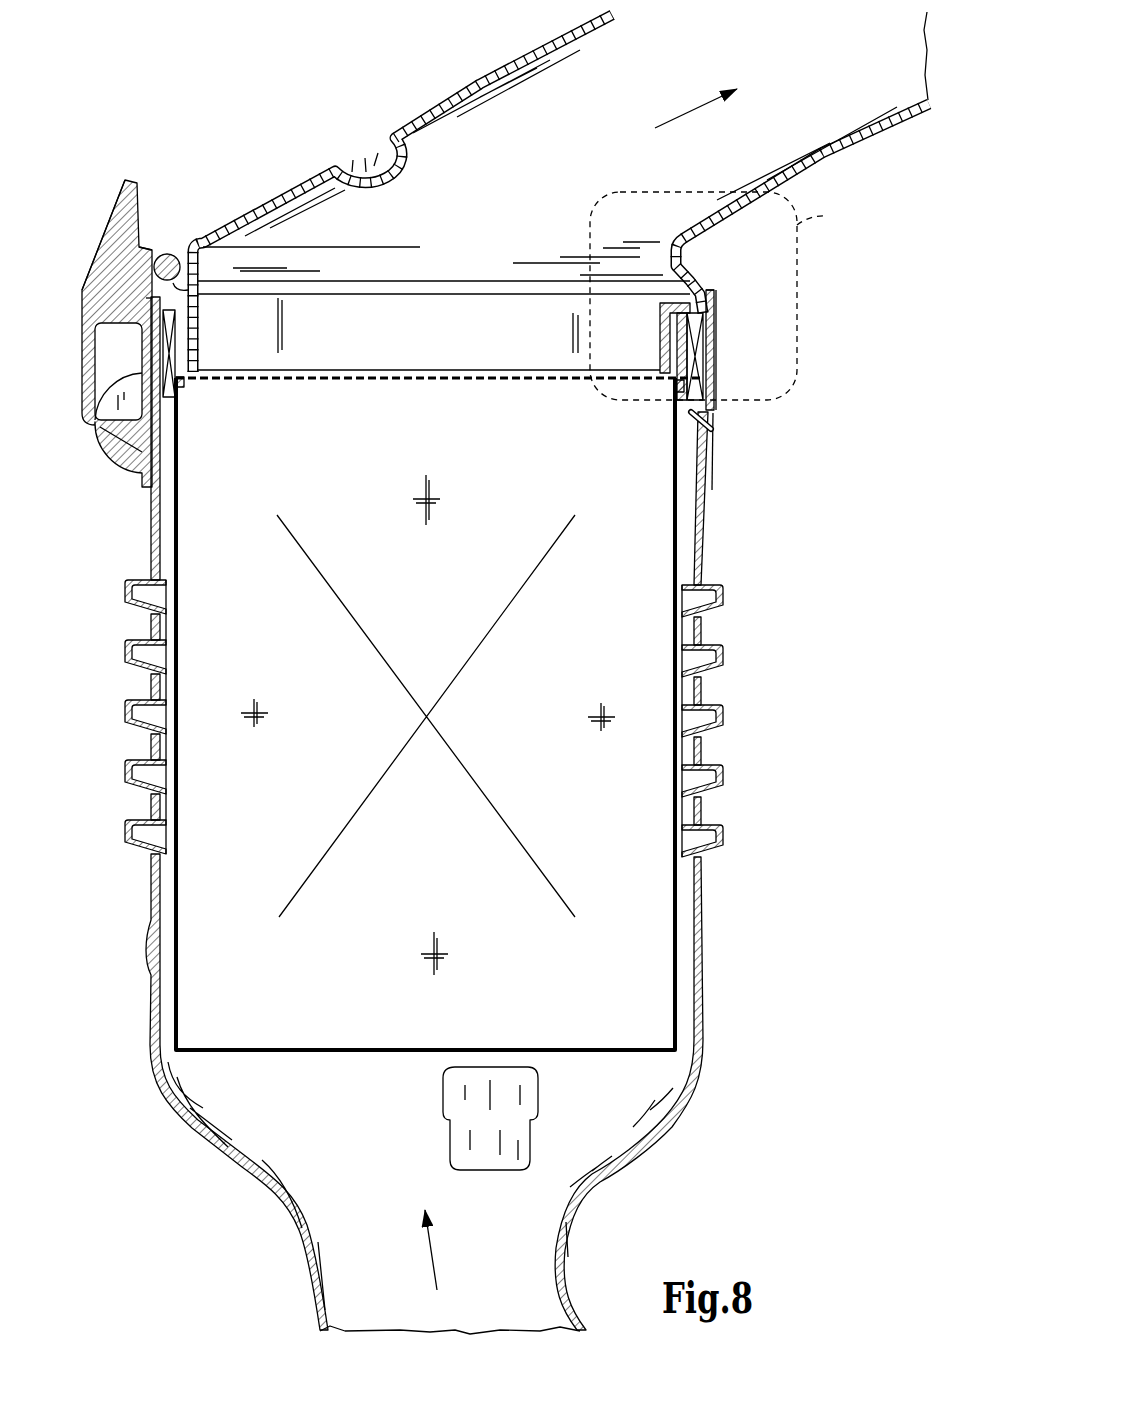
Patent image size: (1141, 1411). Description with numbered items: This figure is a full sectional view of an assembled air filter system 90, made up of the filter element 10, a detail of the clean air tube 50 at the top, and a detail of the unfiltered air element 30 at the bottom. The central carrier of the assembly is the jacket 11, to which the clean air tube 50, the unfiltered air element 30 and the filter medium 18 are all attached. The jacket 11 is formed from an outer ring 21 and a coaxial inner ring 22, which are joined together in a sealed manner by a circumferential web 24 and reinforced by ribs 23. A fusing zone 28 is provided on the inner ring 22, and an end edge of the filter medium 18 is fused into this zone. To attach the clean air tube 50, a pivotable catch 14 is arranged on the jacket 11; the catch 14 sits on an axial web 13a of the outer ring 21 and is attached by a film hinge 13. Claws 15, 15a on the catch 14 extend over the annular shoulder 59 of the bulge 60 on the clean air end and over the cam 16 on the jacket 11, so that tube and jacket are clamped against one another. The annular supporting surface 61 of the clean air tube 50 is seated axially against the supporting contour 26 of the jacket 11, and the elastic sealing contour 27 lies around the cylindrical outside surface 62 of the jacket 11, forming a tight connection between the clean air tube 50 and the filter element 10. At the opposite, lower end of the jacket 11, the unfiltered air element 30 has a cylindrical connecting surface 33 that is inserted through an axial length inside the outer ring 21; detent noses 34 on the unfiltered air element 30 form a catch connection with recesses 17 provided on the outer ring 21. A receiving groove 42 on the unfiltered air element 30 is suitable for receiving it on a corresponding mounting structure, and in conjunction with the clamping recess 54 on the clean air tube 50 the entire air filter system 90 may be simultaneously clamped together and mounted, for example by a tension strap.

The filter element 10 is at (777, 461).
The jacket 11 is at (545, 326).
The film hinge 13 is at (149, 357).
The axial web 13a is at (128, 452).
The catch 14 is at (113, 261).
The claw 15 is at (170, 280).
The claw 15a is at (125, 371).
The cam 16 is at (150, 262).
The recess 17 is at (713, 414).
The filter medium 18 is at (655, 892).
The outer ring 21 is at (713, 388).
The inner ring 22 is at (676, 343).
The rib 23 is at (700, 355).
The circumferential web 24 is at (709, 312).
The supporting contour 26 is at (732, 303).
The elastic sealing contour 27 is at (197, 318).
The fusing zone 28 is at (188, 389).
The unfiltered air element 30 is at (516, 815).
The cylindrical connecting surface 33 is at (707, 522).
The detent nose 34 is at (720, 420).
The receiving groove 42 is at (462, 1133).
The clean air tube 50 is at (541, 211).
The clamping recess 54 is at (367, 152).
The annular shoulder 59 is at (164, 262).
The bulge 60 is at (705, 280).
The annular supporting surface 61 is at (191, 287).
The cylindrical outside surface 62 is at (200, 352).
The air filter system 90 is at (262, 152).